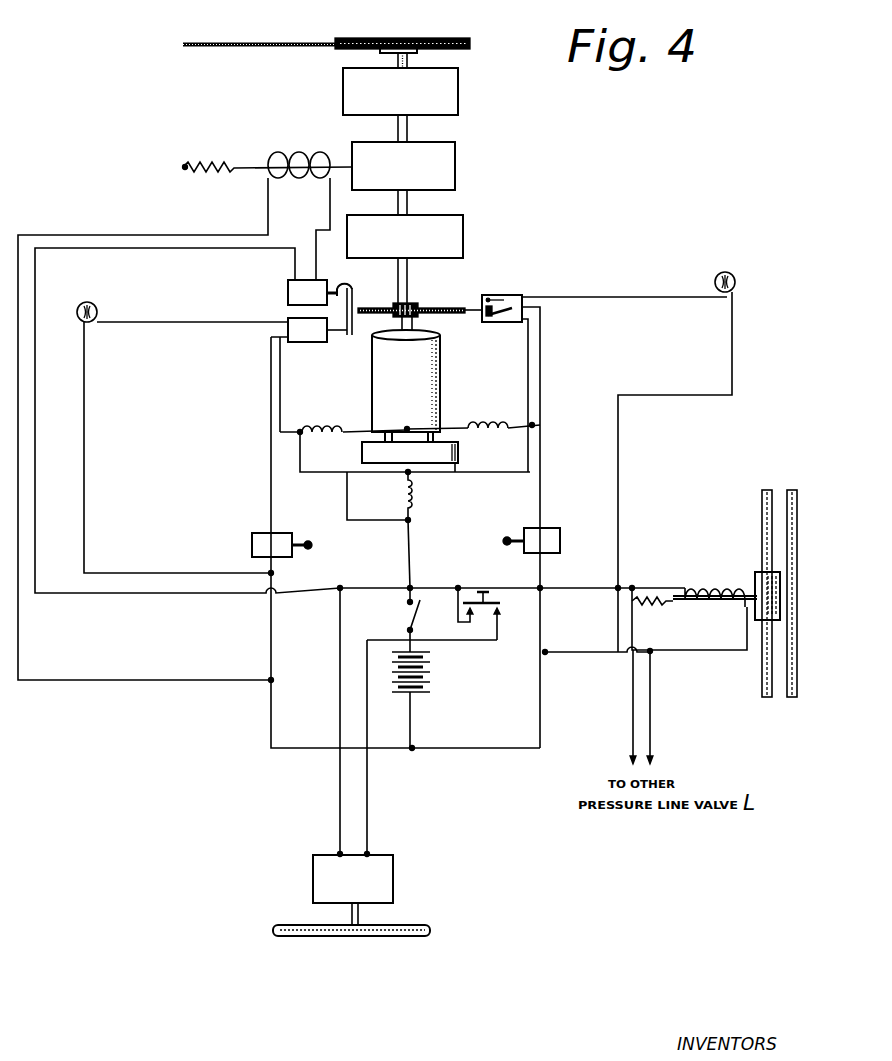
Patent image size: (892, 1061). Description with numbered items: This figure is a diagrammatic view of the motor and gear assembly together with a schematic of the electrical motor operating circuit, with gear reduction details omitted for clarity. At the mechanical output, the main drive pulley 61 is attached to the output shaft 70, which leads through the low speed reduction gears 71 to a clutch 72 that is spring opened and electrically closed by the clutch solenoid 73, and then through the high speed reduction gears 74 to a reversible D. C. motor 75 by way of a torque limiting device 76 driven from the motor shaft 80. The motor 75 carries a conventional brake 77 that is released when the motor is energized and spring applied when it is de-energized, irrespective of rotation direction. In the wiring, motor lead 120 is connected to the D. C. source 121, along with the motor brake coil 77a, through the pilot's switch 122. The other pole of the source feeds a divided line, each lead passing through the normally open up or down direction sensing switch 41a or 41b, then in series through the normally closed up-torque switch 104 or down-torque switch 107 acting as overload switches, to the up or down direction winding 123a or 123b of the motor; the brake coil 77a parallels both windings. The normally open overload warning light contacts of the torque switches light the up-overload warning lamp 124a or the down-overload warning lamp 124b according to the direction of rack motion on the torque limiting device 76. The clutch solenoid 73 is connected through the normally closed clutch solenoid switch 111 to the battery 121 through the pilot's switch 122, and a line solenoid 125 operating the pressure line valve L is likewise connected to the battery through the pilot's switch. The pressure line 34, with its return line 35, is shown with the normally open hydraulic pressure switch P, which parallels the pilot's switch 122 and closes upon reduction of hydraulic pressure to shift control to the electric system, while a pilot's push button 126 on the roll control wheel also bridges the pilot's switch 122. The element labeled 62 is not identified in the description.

The rack 62 is at (273, 42).
The main drive pulley 61 is at (462, 38).
The output shaft 70 is at (410, 60).
The low speed reduction gears 71 is at (450, 103).
The clutch 72 is at (452, 180).
The clutch solenoid 73 is at (306, 152).
The high speed reduction gears 74 is at (463, 227).
The reversible D. C. motor 75 is at (443, 392).
The torque limiting device 76 is at (437, 304).
The brake 77 is at (452, 474).
The motor brake coil 77a is at (412, 489).
The motor shaft 80 is at (418, 323).
The up-torque switch 104 is at (522, 296).
The down-torque switch 107 is at (287, 320).
The clutch solenoid switch 111 is at (291, 282).
The motor lead 120 is at (367, 521).
The D. C. source 121 is at (432, 674).
The pilot's switch 122 is at (407, 614).
The up direction winding 123a is at (493, 430).
The down direction winding 123b is at (330, 423).
The up-overload warning lamp 124a is at (713, 280).
The down-overload warning lamp 124b is at (100, 309).
The line solenoid 125 is at (712, 608).
The pilot's push button 126 is at (500, 600).
The up direction sensing switch 41a is at (561, 528).
The down direction sensing switch 41b is at (290, 533).
The pressure line 34 is at (760, 508).
The return line 35 is at (780, 497).
The pressure switch P is at (390, 882).
The pressure line valve L is at (758, 571).